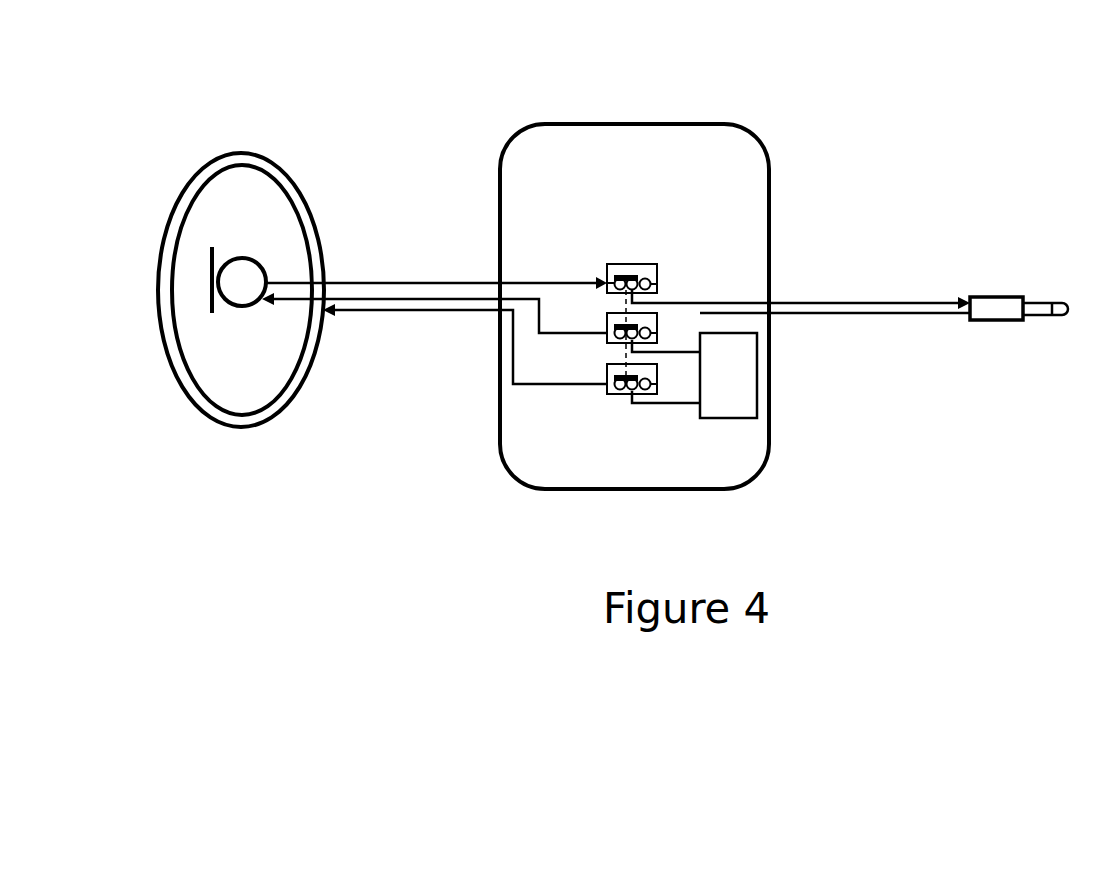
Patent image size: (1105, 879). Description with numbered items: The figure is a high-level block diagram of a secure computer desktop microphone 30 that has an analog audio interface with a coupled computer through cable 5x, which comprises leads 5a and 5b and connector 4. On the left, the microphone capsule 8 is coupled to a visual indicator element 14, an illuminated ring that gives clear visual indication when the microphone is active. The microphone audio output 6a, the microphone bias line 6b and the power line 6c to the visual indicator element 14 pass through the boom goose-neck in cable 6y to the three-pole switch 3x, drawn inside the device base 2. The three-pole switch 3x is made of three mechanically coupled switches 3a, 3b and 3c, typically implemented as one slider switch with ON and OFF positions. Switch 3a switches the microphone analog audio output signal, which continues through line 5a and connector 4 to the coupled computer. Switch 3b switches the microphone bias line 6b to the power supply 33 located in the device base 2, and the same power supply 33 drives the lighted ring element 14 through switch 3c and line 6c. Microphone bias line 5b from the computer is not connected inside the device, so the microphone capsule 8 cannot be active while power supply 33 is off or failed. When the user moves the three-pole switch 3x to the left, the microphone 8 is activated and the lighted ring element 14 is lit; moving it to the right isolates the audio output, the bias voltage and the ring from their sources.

The secure computer desktop microphone 30 is at (352, 76).
The visual indicator element 14 is at (294, 183).
The microphone capsule 8 is at (242, 258).
The microphone audio output 6a is at (353, 283).
The cable 6y is at (434, 252).
The microphone bias line 6b is at (393, 300).
The power line 6c is at (441, 310).
The device base 2 is at (770, 186).
The switch 3a is at (641, 264).
The switch 3b is at (606, 313).
The switch 3c is at (606, 364).
The 3-Pole switch 3x is at (664, 440).
The power supply 33 is at (757, 384).
The line 5a is at (876, 303).
The cable 5x is at (964, 261).
The microphone bias line 5b is at (876, 316).
The connector 4 is at (991, 322).